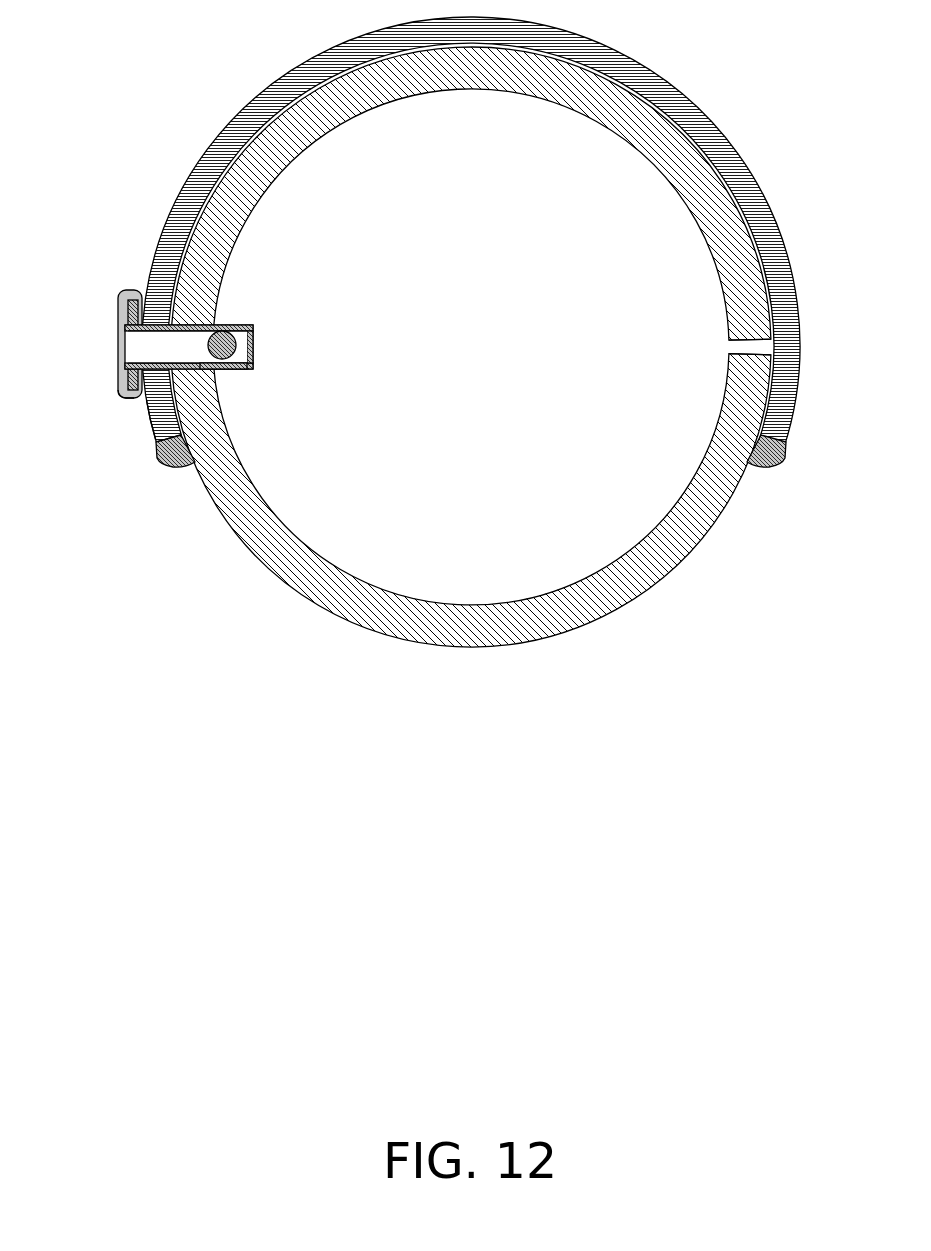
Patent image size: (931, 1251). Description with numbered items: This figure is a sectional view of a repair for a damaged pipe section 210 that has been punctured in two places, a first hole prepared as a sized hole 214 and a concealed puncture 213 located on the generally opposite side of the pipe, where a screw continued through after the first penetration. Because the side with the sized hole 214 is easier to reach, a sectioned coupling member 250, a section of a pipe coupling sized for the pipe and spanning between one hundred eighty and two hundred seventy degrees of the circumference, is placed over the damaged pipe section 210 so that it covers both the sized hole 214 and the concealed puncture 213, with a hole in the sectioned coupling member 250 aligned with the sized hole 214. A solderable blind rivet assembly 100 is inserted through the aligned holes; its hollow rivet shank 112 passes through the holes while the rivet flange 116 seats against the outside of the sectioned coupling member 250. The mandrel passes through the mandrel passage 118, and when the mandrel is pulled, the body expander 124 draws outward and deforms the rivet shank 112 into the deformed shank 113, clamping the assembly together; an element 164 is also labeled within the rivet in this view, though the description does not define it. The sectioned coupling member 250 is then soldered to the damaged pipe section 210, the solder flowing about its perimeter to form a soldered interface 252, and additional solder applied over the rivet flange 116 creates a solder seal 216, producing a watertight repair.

The solderable blind rivet assembly 100 is at (103, 297).
The rivet shank 112 is at (247, 323).
The deformed shank 113 is at (223, 372).
The rivet flange 116 is at (120, 386).
The mandrel passage 118 is at (124, 322).
The body expander 124 is at (135, 348).
The ball 164 is at (257, 350).
The damaged pipe section 210 is at (242, 157).
The concealed puncture 213 is at (738, 325).
The sized hole 214 is at (192, 308).
The solder seal 216 is at (128, 292).
The sectioned coupling member 250 is at (143, 410).
The soldered interface 252 is at (170, 463).